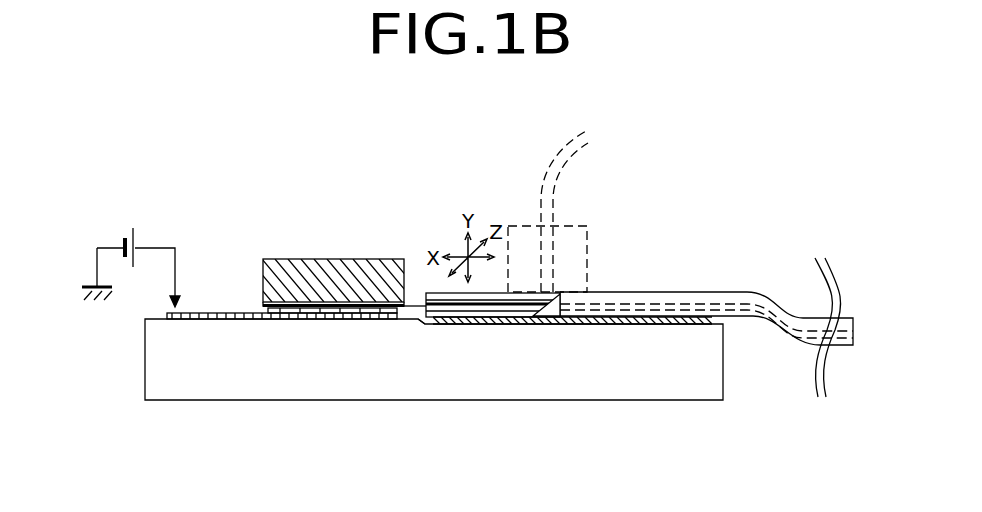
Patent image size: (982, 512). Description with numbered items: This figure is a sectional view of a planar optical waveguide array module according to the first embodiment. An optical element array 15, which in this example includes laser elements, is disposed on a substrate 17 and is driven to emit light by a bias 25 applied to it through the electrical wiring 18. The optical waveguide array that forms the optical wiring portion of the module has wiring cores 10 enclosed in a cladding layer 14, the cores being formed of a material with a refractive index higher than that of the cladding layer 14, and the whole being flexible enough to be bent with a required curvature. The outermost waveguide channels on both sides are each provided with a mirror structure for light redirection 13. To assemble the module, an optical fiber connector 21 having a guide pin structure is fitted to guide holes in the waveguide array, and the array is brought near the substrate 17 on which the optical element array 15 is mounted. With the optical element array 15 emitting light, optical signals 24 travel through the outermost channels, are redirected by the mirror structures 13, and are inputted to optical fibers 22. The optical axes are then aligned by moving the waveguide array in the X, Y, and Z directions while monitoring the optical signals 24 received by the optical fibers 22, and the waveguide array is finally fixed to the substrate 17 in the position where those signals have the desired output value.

The wiring core 10 is at (738, 307).
The mirror structure for light redirection 13 is at (548, 313).
The cladding layer 14 is at (672, 297).
The optical element array 15 is at (335, 277).
The substrate 17 is at (342, 345).
The electrical wiring 18 is at (217, 313).
The optical fiber connector 21 is at (525, 247).
The optical fiber 22 is at (545, 210).
The optical signal 24 is at (413, 312).
The bias 25 is at (128, 273).